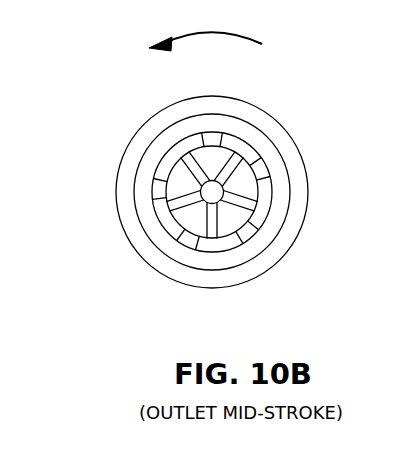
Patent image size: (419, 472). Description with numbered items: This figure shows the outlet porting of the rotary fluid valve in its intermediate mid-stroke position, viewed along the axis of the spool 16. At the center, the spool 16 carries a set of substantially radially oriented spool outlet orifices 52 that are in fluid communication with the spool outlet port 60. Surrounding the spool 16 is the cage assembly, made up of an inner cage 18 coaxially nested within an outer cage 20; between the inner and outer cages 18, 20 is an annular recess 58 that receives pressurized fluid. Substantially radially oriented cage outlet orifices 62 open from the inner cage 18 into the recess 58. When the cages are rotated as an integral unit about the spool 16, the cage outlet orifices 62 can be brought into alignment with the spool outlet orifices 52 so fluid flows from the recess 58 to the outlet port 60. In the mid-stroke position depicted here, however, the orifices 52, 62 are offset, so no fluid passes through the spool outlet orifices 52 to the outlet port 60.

The spool 16 is at (213, 157).
The inner cage 18 is at (150, 200).
The outer cage 20 is at (308, 210).
The spool outlet orifices 52 is at (190, 163).
The annular recess 58 is at (162, 147).
The spool outlet port 60 is at (216, 192).
The cage outlet orifices 62 is at (206, 145).